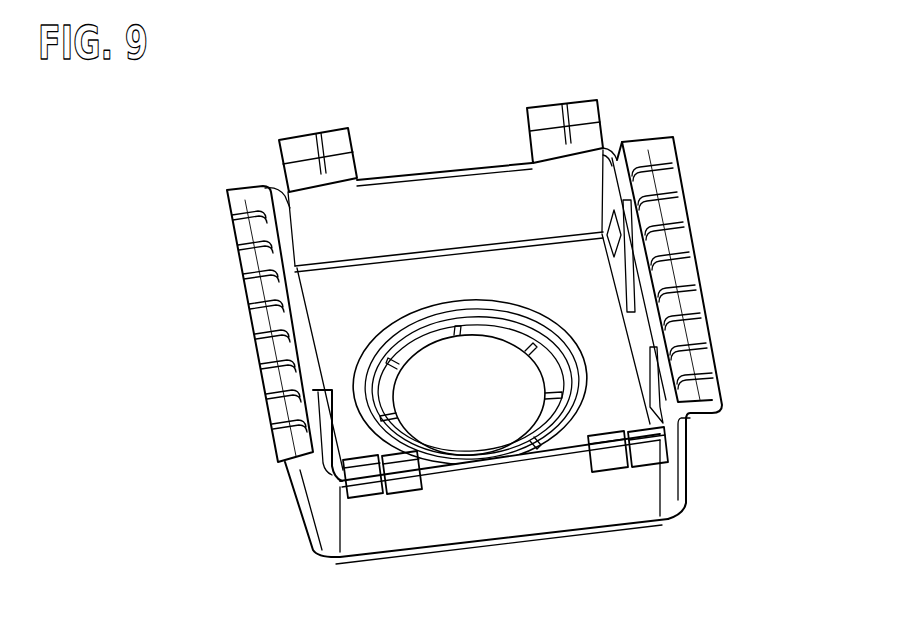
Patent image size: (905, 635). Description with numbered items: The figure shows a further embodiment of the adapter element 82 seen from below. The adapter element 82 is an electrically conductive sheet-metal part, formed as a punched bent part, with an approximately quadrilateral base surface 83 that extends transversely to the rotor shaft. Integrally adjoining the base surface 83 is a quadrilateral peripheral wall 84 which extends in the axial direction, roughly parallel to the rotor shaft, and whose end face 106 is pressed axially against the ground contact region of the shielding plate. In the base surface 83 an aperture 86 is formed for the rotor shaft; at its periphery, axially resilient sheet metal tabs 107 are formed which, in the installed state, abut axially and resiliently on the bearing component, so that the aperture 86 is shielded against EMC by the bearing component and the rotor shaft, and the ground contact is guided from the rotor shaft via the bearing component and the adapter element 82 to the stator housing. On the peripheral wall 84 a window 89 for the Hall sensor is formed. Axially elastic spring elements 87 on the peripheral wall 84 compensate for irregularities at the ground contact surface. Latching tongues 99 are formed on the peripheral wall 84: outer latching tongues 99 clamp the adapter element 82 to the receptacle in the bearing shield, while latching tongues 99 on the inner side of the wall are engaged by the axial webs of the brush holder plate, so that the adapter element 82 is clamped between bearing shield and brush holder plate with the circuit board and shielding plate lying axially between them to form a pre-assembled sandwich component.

The adapter element 82 is at (708, 143).
The base surface 83 is at (401, 298).
The peripheral wall 84 is at (567, 495).
The aperture 86 is at (485, 420).
The spring elements 87 is at (242, 203).
The window 89 is at (470, 155).
The latching tongues 99 is at (613, 247).
The end face 106 is at (653, 150).
The sheet metal tabs 107 is at (433, 352).